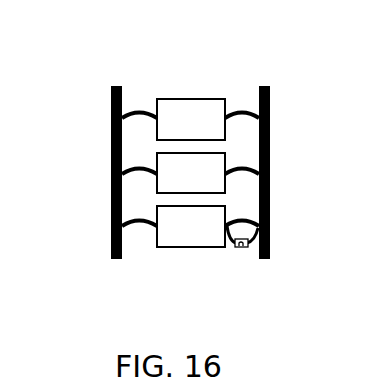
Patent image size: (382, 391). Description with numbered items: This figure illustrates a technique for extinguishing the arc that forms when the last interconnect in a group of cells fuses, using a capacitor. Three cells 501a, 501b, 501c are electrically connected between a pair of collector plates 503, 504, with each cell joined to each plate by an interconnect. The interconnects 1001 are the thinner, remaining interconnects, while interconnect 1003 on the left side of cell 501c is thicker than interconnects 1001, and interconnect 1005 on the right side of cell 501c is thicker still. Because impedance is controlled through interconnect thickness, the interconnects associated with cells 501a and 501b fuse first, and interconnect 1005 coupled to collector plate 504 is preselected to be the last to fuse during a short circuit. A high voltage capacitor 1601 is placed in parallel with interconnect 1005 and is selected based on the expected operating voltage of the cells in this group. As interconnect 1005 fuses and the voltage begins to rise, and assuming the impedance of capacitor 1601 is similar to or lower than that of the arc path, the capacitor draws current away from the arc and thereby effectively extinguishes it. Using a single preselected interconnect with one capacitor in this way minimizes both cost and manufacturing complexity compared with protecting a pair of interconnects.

The collector plate 503 is at (112, 118).
The collector plate 504 is at (270, 123).
The cell 501a is at (203, 98).
The cell 501b is at (218, 160).
The cell 501c is at (205, 248).
The interconnect 1001 is at (137, 113).
The interconnect 1003 is at (137, 222).
The interconnect 1005 is at (247, 219).
The high voltage capacitor 1601 is at (248, 245).